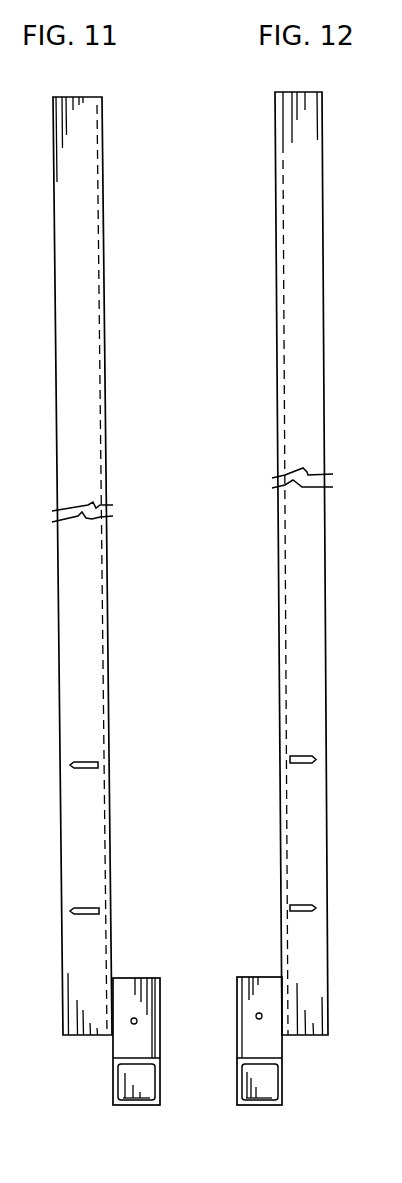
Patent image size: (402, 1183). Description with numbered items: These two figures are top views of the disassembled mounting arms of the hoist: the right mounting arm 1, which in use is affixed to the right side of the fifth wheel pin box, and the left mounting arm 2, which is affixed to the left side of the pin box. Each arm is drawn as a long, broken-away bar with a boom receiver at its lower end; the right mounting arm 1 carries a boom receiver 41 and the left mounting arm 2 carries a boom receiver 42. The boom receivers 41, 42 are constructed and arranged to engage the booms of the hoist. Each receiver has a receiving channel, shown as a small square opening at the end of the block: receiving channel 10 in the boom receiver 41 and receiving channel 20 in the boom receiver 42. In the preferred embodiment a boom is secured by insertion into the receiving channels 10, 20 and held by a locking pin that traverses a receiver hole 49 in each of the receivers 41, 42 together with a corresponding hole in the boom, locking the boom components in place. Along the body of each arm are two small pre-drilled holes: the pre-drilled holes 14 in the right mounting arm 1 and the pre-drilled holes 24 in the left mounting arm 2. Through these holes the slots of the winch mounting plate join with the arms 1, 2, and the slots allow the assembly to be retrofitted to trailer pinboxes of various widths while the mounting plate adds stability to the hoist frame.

In FIG. 11, the right mounting arm 1 is at (77, 400).
In FIG. 12, the left mounting arm 2 is at (310, 427).
In FIG. 11, the pre-drilled holes 14 is at (80, 762).
In FIG. 12, the pre-drilled holes 24 is at (308, 757).
In FIG. 11, the boom receiver 41 is at (131, 1043).
In FIG. 12, the boom receiver 42 is at (273, 1046).
In FIG. 11, the receiver holes 49 is at (137, 1019).
In FIG. 12, the receiver holes 49 is at (256, 1014).
In FIG. 11, the receiving channel 10 is at (146, 1088).
In FIG. 12, the receiving channel 20 is at (267, 1090).